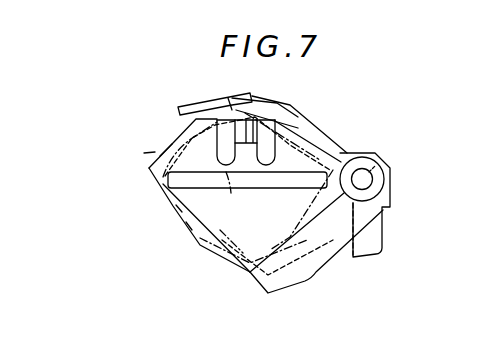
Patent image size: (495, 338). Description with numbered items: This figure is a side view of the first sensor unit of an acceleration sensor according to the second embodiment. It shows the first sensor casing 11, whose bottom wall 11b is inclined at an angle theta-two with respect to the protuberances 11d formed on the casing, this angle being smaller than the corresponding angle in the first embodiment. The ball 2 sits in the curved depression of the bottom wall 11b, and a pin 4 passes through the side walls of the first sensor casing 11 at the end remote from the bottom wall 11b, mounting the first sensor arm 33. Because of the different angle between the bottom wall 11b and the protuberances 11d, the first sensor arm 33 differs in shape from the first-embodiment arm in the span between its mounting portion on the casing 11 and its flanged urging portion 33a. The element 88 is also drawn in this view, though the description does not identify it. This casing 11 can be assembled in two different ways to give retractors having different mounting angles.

The ball 2 is at (126, 143).
The pin 4 is at (388, 167).
The first sensor casing 11 is at (320, 281).
The bottom wall 11b is at (177, 247).
The protuberances 11d is at (161, 220).
The first sensor arm 33 is at (353, 176).
The flanged urging portion 33a is at (224, 102).
The guide bar 88 is at (188, 195).